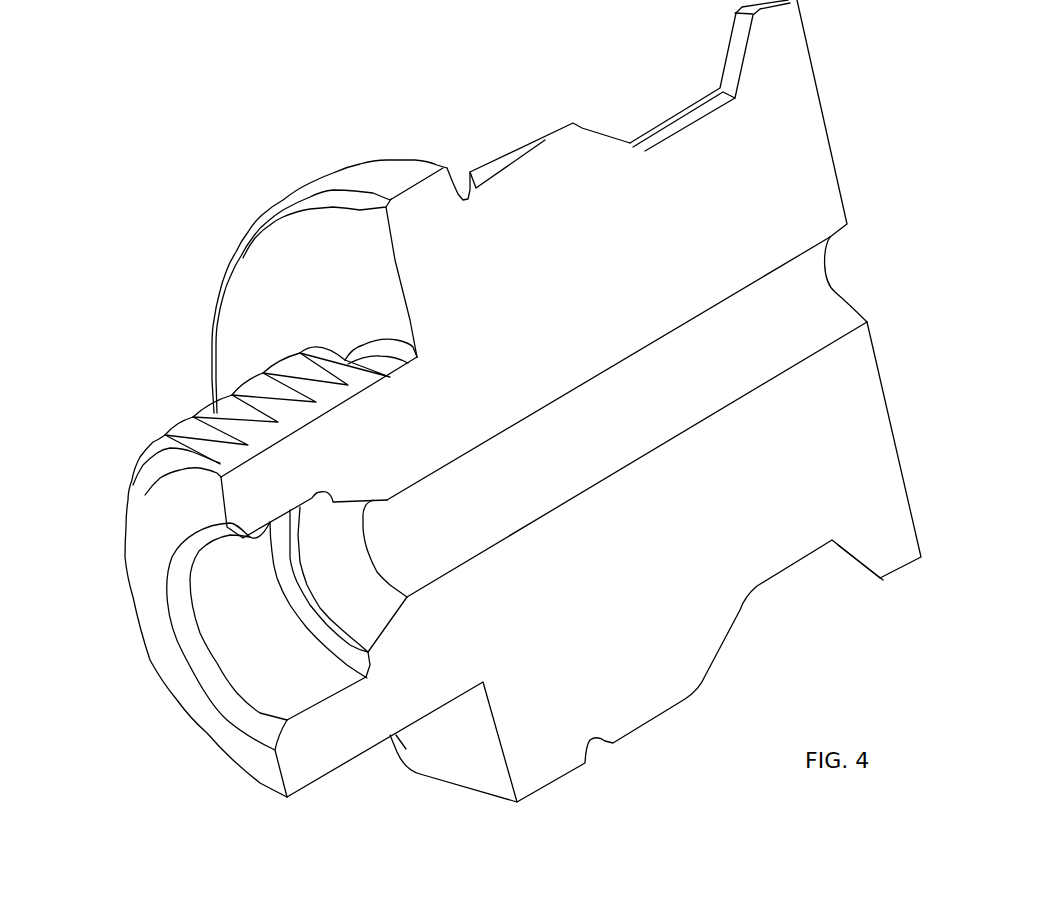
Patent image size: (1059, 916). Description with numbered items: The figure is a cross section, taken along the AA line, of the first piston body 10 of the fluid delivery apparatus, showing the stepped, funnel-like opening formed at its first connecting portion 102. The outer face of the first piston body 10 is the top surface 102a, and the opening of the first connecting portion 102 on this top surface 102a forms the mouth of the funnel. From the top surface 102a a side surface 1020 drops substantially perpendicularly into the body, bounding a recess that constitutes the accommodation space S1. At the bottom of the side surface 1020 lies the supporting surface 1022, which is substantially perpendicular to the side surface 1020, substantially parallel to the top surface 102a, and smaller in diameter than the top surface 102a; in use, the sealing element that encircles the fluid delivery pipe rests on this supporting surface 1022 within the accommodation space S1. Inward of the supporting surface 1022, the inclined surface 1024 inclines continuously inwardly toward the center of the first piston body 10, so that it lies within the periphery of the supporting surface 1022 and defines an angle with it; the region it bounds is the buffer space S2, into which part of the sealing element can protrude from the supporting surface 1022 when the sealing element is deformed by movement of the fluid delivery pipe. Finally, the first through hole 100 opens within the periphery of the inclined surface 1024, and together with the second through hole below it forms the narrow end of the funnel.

The first piston body 10 is at (332, 94).
The first through hole 100 is at (588, 413).
The first connecting portion 102 is at (125, 542).
The top surface 102a is at (177, 663).
The accommodation space S1 is at (213, 596).
The buffer space S2 is at (340, 577).
The side surface 1020 is at (300, 713).
The supporting surface 1022 is at (368, 665).
The inclined surface 1024 is at (400, 605).